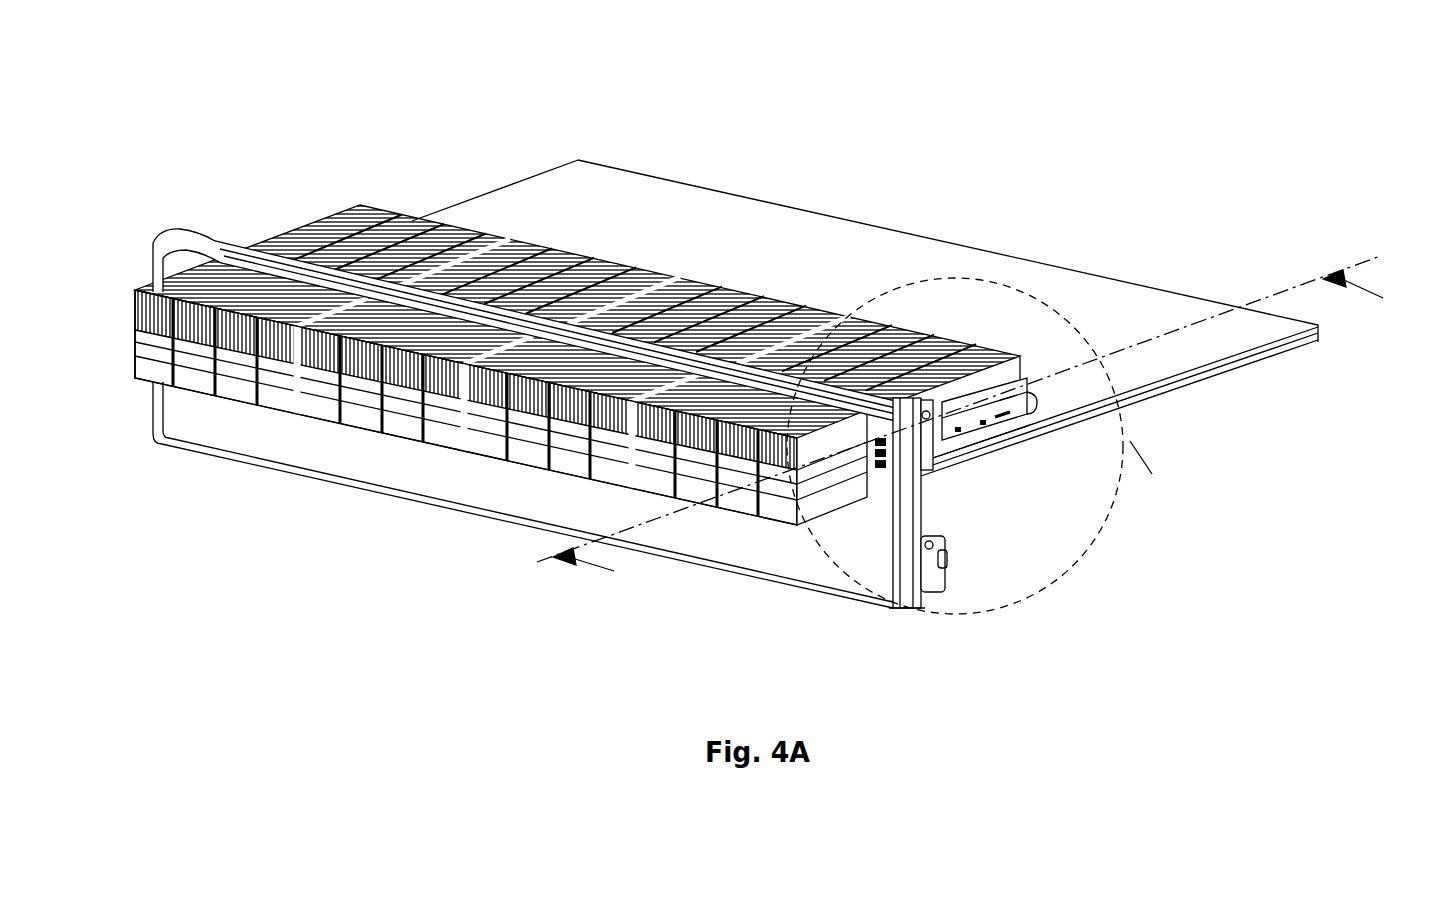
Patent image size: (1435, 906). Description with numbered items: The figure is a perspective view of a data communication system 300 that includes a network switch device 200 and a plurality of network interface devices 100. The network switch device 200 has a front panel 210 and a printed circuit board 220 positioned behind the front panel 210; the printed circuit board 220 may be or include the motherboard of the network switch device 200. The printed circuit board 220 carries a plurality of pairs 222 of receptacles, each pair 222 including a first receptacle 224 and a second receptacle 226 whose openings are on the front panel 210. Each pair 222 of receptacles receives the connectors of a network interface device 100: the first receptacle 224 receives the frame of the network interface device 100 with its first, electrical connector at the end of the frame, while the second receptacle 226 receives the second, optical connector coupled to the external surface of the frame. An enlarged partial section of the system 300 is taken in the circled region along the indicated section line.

The network interface device 100 is at (287, 377).
The network switch device 200 is at (765, 416).
The front panel 210 is at (878, 557).
The printed circuit board 220 is at (1172, 376).
The pair of receptacles 222 is at (1009, 463).
The first receptacle 224 is at (922, 472).
The second receptacle 226 is at (1018, 427).
The data communication system 300 is at (100, 80).